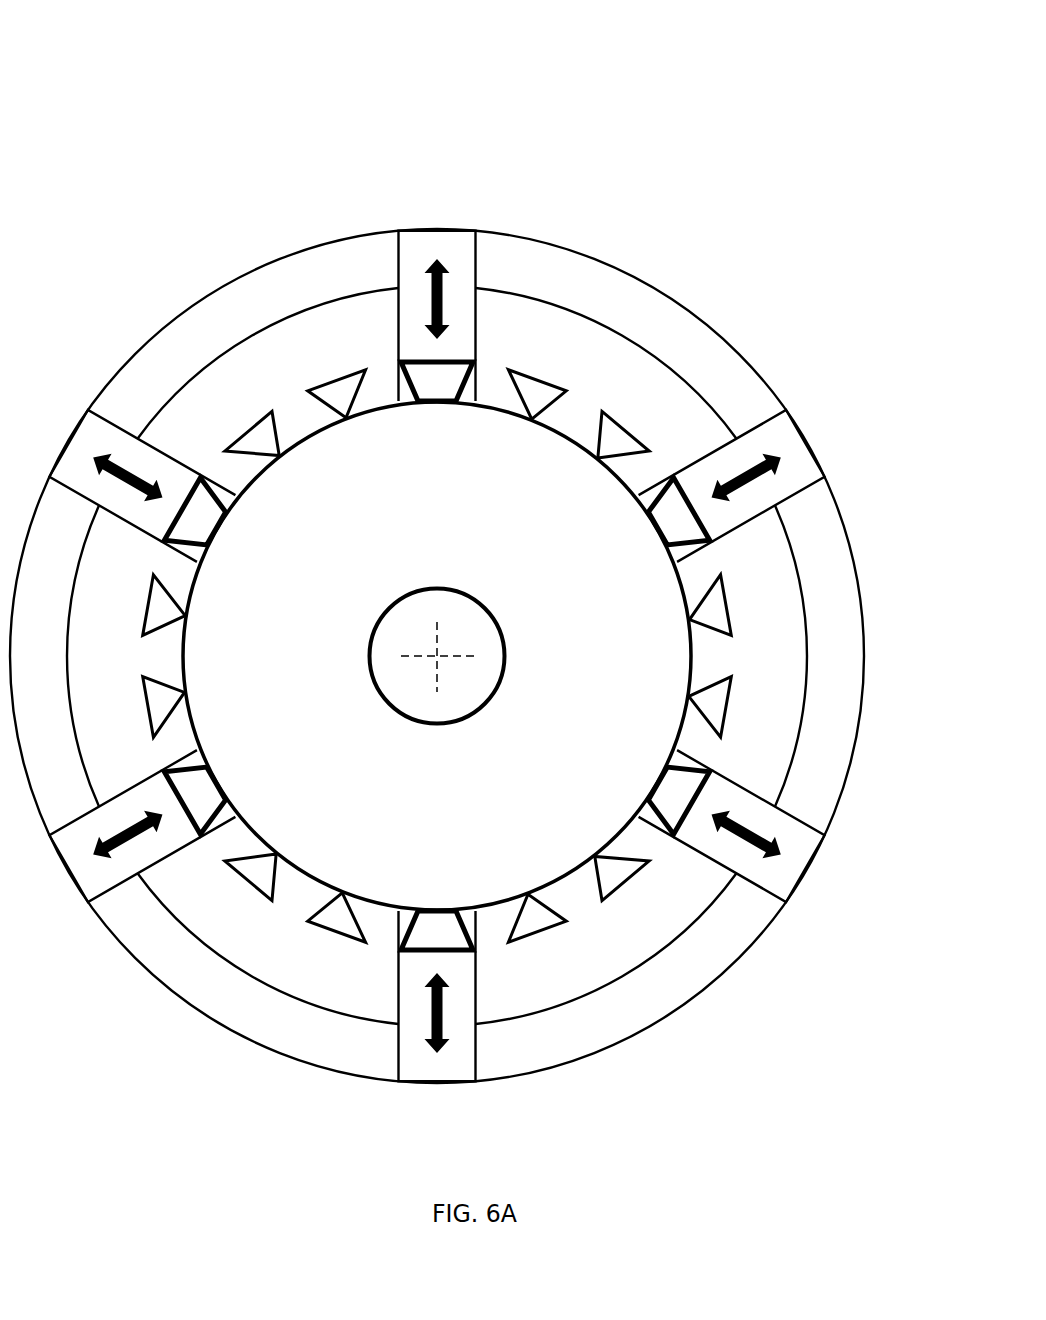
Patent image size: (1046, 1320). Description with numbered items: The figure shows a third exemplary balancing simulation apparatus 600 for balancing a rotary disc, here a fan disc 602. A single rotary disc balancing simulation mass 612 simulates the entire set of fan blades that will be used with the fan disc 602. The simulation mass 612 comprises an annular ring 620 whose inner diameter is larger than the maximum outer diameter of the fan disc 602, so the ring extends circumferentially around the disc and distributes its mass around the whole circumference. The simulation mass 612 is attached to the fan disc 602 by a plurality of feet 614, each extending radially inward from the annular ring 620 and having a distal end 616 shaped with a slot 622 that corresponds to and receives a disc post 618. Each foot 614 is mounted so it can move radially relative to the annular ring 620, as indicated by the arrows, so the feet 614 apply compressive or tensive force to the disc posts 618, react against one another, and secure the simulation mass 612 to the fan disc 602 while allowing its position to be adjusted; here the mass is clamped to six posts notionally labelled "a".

The balancing simulation apparatus 600 is at (706, 252).
The fan disc 602 is at (558, 852).
The rotary disc balancing simulation mass 612 is at (520, 273).
The foot 614 is at (423, 278).
The distal end 616 is at (462, 382).
The disc post 618 is at (435, 390).
The annular ring 620 is at (173, 958).
The slot 622 is at (405, 358).